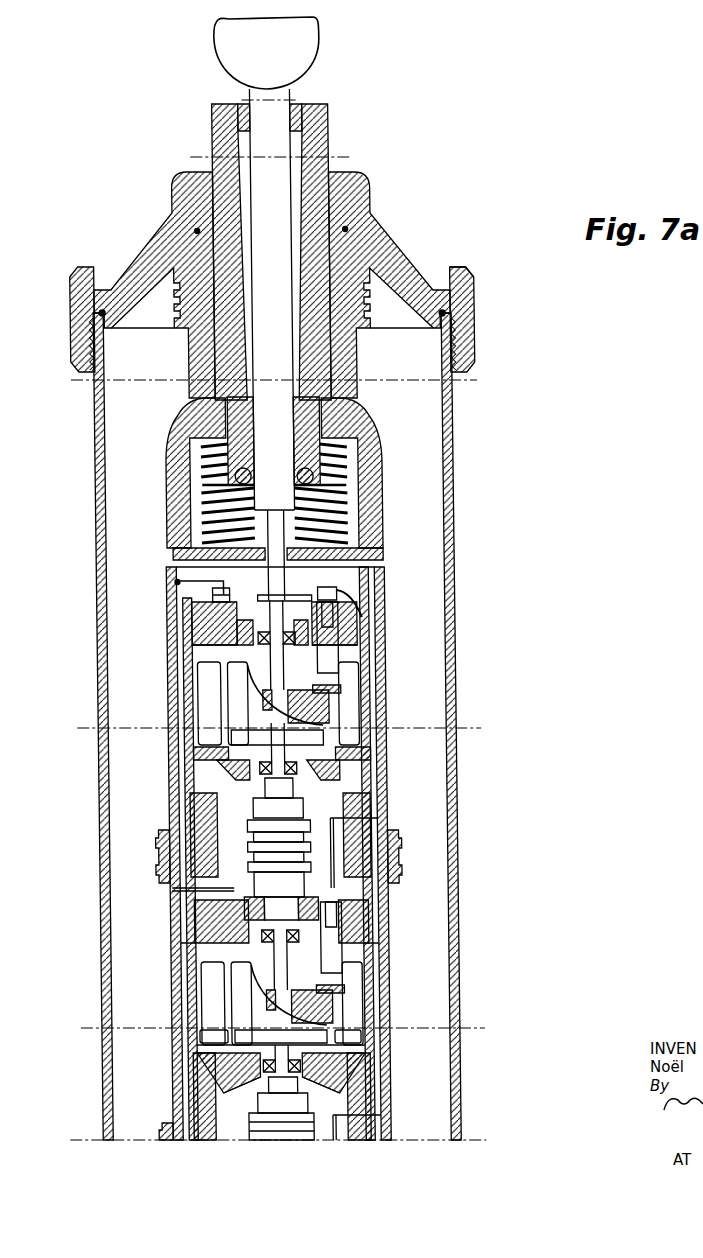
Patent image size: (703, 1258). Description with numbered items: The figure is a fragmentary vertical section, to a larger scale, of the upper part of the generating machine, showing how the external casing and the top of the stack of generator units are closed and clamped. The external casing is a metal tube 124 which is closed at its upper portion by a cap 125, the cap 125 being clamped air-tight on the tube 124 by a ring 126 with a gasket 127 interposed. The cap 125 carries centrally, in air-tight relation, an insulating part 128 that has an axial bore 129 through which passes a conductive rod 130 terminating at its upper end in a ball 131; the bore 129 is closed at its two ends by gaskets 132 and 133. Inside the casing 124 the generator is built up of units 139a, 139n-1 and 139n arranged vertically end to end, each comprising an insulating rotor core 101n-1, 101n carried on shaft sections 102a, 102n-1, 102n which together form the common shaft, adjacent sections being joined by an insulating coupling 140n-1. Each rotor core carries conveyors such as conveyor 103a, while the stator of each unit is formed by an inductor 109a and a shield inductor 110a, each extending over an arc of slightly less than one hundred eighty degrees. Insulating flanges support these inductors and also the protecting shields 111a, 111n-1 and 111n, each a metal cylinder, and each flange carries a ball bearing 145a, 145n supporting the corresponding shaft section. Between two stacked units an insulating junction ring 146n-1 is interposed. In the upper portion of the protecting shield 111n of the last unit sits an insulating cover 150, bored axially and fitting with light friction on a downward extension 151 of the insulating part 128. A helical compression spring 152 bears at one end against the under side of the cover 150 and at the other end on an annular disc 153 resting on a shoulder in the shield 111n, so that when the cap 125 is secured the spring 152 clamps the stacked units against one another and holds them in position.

The ball 131 is at (312, 52).
The conductive rod 130 is at (278, 105).
The gasket 132 is at (237, 115).
The axial bore 129 is at (293, 172).
The cap 125 is at (397, 260).
The gasket 127 is at (470, 280).
The ring 126 is at (467, 355).
The metal tube 124 is at (453, 380).
The insulating part 128 is at (190, 387).
The downward extension 151 is at (347, 450).
The insulating cover 150 is at (177, 458).
The helical compression spring 152 is at (382, 521).
The annular disc 153 is at (380, 560).
The gasket 133 is at (220, 488).
The protecting shield 111n is at (378, 617).
The ball bearing 145n is at (182, 643).
The unit 139n is at (396, 666).
The insulating rotor core 101n is at (317, 708).
The shaft section 102n is at (275, 673).
The protecting shield 111n-1 is at (384, 785).
The insulating coupling 140n-1 is at (297, 850).
The insulating junction ring 146n-1 is at (155, 853).
The unit 139n-1 is at (396, 938).
The insulating rotor core 101n-1 is at (326, 1003).
The shaft section 102n-1 is at (278, 961).
The conveyor 103a is at (355, 1040).
The shield inductor 110a is at (365, 1072).
The inductor 109a is at (230, 1046).
The protecting shield 111a is at (362, 1088).
The shaft section 102a is at (285, 1051).
The unit 139a is at (385, 1108).
The ball bearing 145a is at (245, 1080).